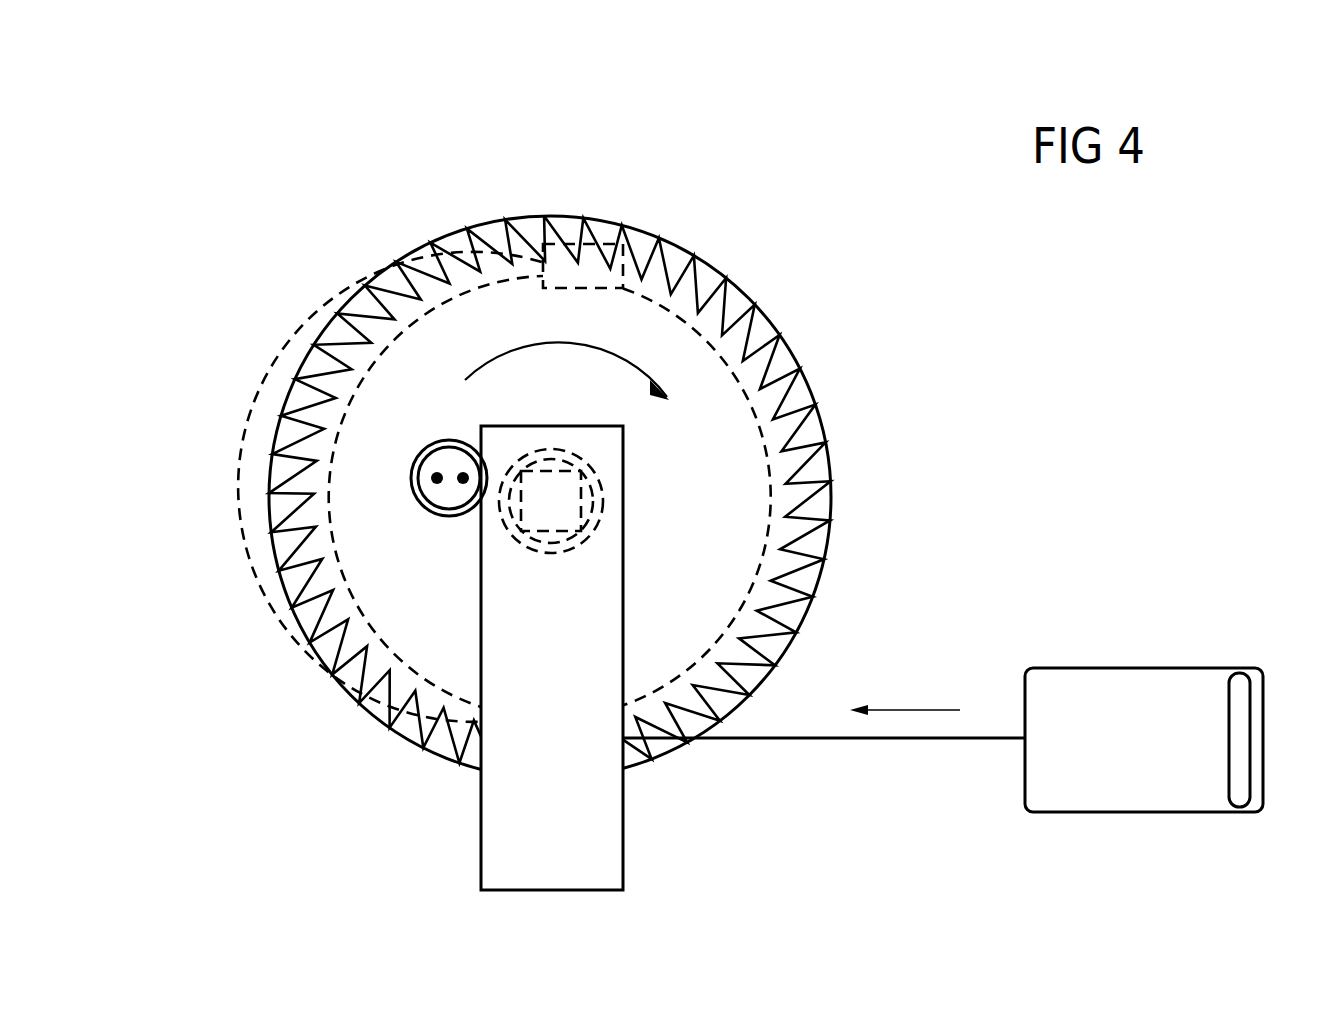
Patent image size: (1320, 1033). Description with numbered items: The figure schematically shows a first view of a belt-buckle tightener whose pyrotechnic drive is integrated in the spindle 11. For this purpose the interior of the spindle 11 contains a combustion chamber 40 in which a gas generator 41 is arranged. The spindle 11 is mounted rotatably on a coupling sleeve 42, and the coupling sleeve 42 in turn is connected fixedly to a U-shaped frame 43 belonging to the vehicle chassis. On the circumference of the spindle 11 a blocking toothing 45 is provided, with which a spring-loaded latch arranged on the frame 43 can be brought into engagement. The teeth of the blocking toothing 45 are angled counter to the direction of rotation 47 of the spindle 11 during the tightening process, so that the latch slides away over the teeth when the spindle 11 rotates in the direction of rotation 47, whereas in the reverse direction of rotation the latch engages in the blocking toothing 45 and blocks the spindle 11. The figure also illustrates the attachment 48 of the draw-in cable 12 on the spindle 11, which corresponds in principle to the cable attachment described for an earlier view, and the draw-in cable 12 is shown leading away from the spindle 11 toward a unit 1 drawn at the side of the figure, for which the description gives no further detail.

The control unit 1 is at (1083, 668).
The spindle 11 is at (777, 277).
The draw-in cable 12 is at (853, 738).
The combustion chamber 40 is at (493, 375).
The gas generator 41 is at (408, 460).
The coupling sleeve 42 is at (597, 498).
The U-shaped frame 43 is at (588, 822).
The blocking toothing 45 is at (435, 760).
The direction of rotation 47 is at (613, 350).
The attachment of the draw-in cable 48 is at (567, 205).